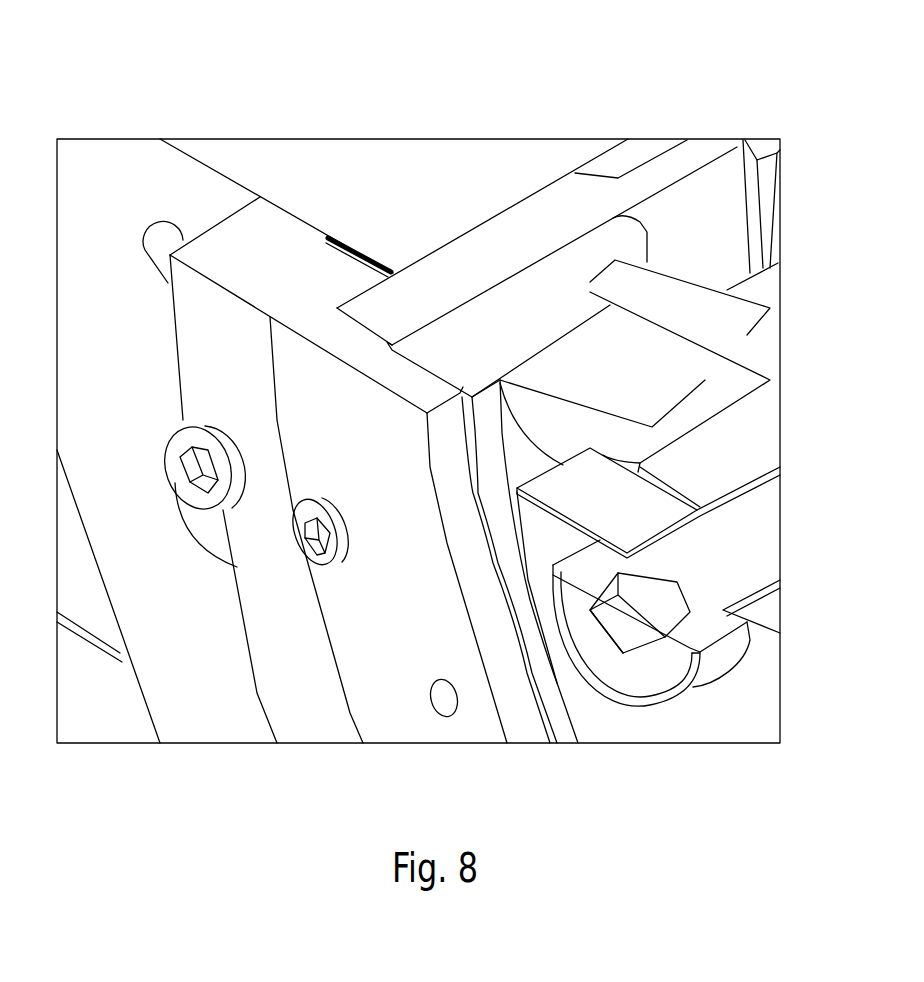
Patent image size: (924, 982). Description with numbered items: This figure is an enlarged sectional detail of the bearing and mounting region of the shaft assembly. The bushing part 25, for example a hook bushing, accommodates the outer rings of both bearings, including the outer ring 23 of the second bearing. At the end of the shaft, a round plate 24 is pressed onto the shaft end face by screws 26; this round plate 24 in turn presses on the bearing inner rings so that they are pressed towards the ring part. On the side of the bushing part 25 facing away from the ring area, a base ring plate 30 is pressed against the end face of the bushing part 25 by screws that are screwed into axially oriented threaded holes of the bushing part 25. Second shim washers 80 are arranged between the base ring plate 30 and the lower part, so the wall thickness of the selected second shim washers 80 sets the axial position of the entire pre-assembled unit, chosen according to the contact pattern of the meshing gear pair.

The base ring plate 30 is at (258, 265).
The second shim washers 80 is at (367, 250).
The bushing part 25 is at (527, 232).
The outer ring 23 is at (545, 282).
The round plate 24 is at (628, 507).
The screws 26 is at (670, 668).